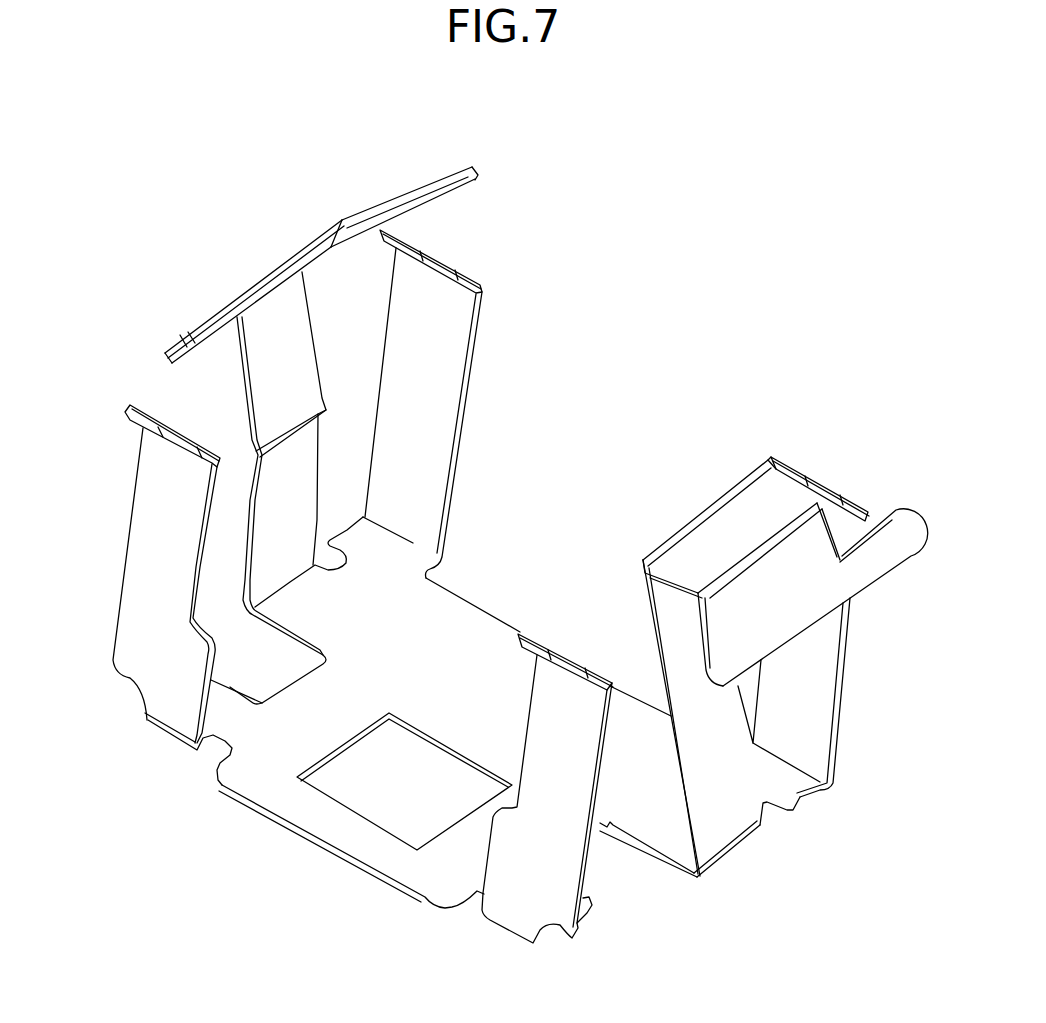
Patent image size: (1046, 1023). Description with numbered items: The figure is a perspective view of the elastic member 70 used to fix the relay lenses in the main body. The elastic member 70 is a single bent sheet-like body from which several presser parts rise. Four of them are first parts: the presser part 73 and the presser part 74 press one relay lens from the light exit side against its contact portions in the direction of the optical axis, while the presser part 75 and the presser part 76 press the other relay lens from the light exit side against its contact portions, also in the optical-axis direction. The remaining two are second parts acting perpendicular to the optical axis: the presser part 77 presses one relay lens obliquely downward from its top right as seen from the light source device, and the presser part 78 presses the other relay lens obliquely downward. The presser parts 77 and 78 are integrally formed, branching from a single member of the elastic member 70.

The elastic member 70 is at (293, 853).
The presser part 73 is at (435, 395).
The presser part 74 is at (847, 677).
The presser part 75 is at (152, 505).
The presser part 76 is at (557, 862).
The presser part 77 is at (253, 285).
The presser part 78 is at (405, 200).